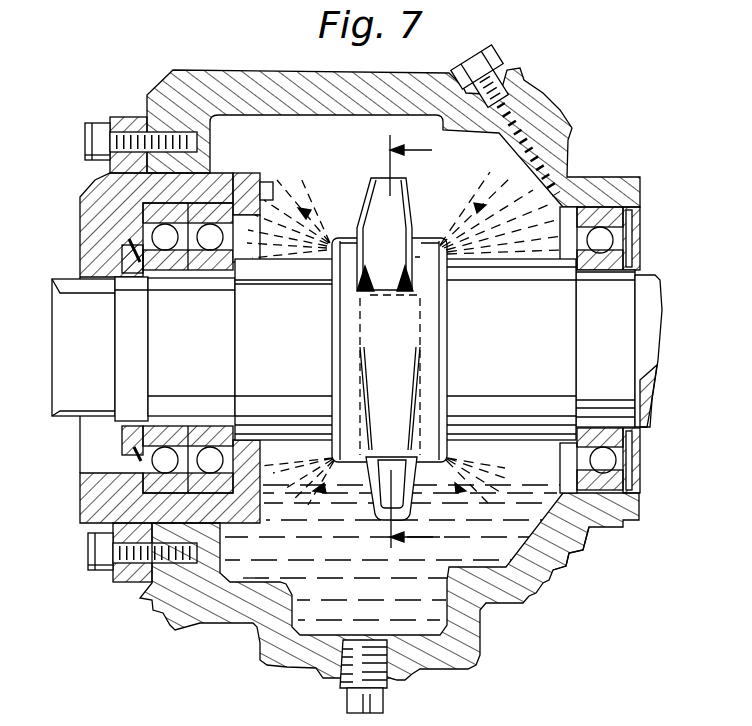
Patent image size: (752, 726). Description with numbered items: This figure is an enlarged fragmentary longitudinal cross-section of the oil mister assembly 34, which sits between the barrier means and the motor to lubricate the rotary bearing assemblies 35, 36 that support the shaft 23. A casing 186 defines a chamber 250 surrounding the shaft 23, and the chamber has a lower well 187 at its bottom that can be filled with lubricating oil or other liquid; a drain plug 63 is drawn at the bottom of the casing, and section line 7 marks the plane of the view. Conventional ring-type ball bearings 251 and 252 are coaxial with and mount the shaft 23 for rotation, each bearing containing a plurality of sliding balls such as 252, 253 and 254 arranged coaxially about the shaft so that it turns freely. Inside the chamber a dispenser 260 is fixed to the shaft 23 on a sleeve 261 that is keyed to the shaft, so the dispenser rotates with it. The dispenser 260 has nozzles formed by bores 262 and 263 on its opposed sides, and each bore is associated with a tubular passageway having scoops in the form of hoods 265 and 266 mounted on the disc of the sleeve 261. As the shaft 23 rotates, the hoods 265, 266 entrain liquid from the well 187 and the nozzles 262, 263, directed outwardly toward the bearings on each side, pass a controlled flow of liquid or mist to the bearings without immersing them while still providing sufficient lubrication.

The casing 186 is at (276, 72).
The hood 266 is at (388, 135).
The chamber 250 is at (362, 140).
The bore 262 is at (358, 232).
The bore 263 is at (426, 234).
The section line 7- 7 is at (423, 344).
The rotary bearing assembly 35 is at (603, 208).
The rotary bearing assembly 36 is at (132, 212).
The sleeve 261 is at (576, 285).
The dispenser 260 is at (462, 326).
The shaft 23 is at (204, 353).
The ball bearing 252 is at (158, 461).
The ball bearing 251 is at (147, 476).
The sliding ball 253 is at (140, 492).
The sliding ball 254 is at (610, 458).
The hood 265 is at (440, 464).
The oil mister assembly 34 is at (574, 564).
The lower well 187 is at (288, 584).
The drain plug 63 is at (393, 673).